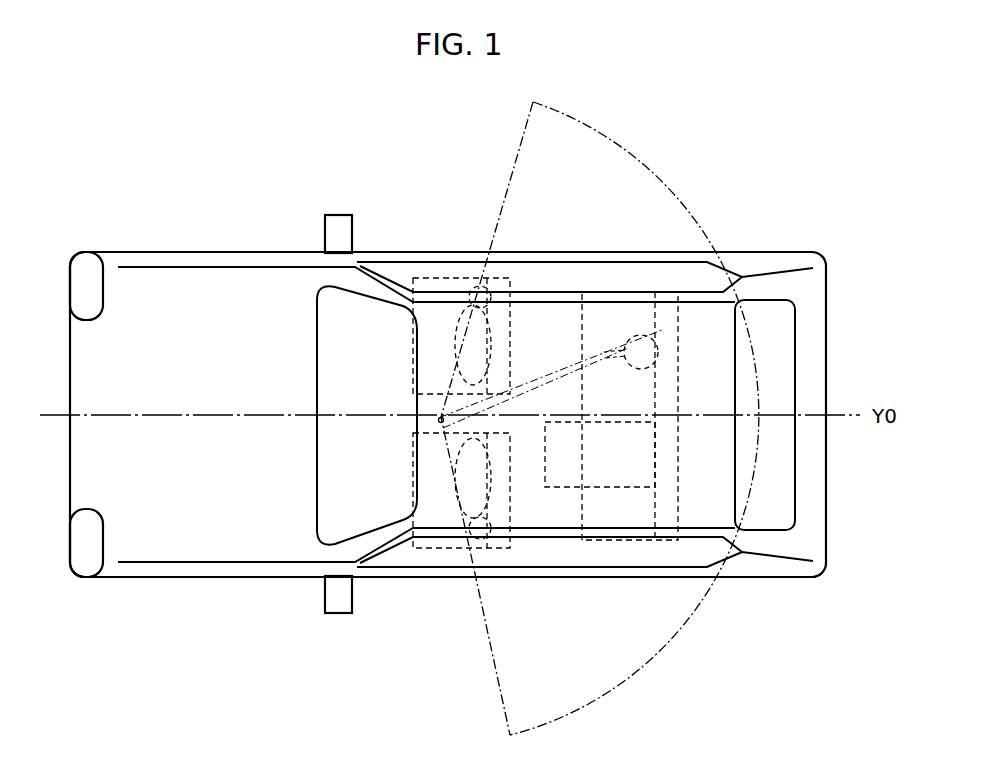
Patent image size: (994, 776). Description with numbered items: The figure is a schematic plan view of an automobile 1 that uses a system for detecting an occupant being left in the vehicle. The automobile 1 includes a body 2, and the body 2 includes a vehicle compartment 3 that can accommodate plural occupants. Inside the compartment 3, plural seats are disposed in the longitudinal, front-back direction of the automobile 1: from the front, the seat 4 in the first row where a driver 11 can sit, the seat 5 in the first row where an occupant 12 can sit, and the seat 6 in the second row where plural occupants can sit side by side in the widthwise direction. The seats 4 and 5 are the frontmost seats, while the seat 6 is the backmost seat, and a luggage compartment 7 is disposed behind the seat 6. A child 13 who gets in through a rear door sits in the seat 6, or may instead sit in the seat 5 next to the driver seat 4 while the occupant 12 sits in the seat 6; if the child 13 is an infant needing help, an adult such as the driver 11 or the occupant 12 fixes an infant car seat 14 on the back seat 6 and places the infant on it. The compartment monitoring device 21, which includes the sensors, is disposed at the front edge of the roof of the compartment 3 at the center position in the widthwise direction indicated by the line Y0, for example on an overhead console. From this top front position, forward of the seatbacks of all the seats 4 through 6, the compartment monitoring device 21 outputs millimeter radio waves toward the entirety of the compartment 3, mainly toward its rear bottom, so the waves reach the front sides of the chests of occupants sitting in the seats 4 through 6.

The automobile 1 is at (215, 170).
The body 2 is at (275, 285).
The vehicle compartment 3 is at (562, 268).
The seat 4 is at (447, 280).
The seat 5 is at (427, 550).
The seat 6 is at (630, 292).
The luggage compartment 7 is at (780, 357).
The driver 11 is at (478, 282).
The occupant 12 is at (485, 520).
The child 13 is at (650, 337).
The infant car seat 14 is at (560, 473).
The compartment monitoring device 21 is at (441, 420).